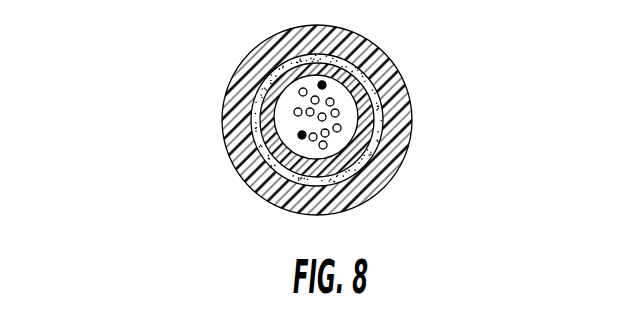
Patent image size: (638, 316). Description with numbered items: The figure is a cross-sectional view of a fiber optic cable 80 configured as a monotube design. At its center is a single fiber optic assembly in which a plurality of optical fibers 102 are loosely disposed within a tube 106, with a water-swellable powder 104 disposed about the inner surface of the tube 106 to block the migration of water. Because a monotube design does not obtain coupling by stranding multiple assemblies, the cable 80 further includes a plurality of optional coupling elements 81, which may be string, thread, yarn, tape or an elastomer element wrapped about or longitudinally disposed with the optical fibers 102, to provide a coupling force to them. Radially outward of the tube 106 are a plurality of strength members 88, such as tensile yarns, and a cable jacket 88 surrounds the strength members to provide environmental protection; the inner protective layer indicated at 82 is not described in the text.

The fiber optic cable 80 is at (104, 70).
The coupling elements 81 is at (277, 62).
The inner layer 82 is at (380, 130).
The strength members 88 is at (268, 202).
The optical fibers 102 is at (339, 113).
The water-swellable powder 104 is at (341, 128).
The tube 106 is at (237, 158).